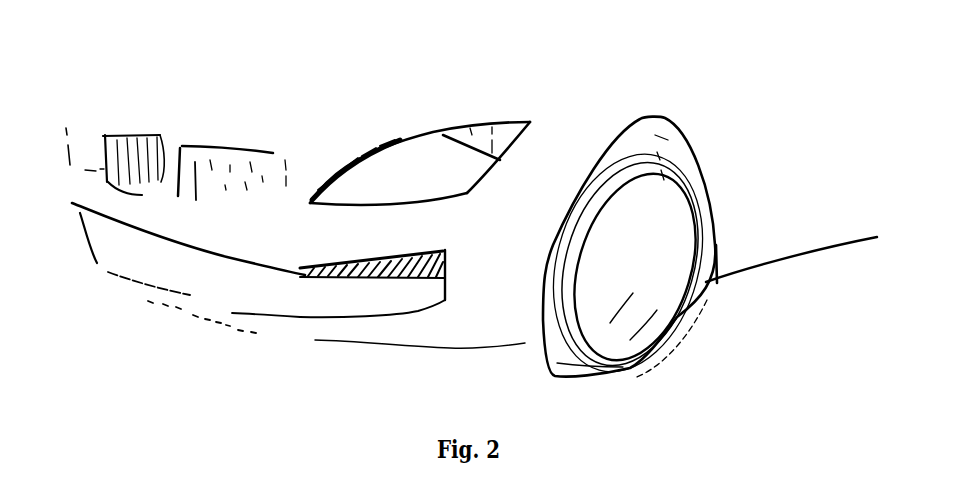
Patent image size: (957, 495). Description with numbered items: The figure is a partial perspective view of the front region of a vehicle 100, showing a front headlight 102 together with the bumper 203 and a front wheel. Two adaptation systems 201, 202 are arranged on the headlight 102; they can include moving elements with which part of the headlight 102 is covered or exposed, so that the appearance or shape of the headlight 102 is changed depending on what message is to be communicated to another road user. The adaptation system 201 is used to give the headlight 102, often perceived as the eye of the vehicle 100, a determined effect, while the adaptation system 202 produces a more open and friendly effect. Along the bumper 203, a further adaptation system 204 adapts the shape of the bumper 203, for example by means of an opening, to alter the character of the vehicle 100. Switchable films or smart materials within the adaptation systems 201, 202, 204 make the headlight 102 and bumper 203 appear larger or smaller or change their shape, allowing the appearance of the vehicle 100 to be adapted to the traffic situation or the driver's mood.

The vehicle 100 is at (268, 75).
The headlight 102 is at (453, 178).
The adaptation system 201 is at (368, 142).
The adaptation system 202 is at (493, 122).
The bumper 203 is at (247, 280).
The adaptation system 204 is at (418, 260).